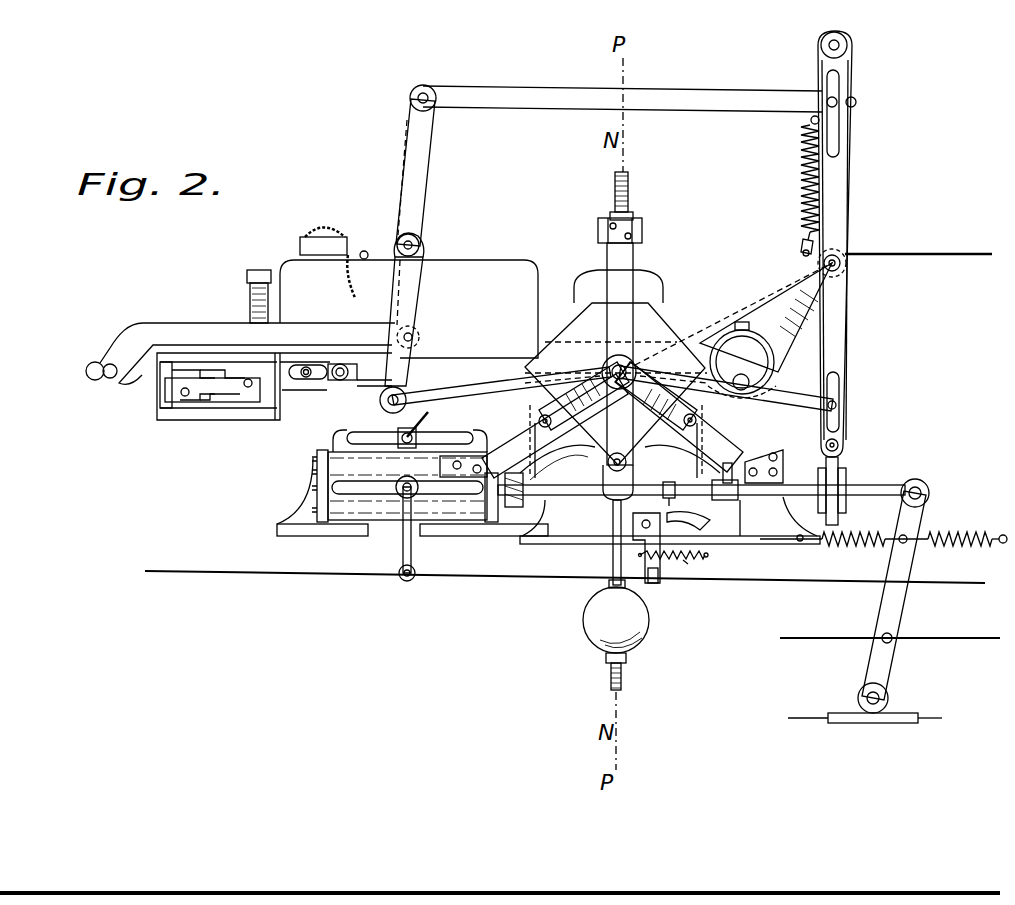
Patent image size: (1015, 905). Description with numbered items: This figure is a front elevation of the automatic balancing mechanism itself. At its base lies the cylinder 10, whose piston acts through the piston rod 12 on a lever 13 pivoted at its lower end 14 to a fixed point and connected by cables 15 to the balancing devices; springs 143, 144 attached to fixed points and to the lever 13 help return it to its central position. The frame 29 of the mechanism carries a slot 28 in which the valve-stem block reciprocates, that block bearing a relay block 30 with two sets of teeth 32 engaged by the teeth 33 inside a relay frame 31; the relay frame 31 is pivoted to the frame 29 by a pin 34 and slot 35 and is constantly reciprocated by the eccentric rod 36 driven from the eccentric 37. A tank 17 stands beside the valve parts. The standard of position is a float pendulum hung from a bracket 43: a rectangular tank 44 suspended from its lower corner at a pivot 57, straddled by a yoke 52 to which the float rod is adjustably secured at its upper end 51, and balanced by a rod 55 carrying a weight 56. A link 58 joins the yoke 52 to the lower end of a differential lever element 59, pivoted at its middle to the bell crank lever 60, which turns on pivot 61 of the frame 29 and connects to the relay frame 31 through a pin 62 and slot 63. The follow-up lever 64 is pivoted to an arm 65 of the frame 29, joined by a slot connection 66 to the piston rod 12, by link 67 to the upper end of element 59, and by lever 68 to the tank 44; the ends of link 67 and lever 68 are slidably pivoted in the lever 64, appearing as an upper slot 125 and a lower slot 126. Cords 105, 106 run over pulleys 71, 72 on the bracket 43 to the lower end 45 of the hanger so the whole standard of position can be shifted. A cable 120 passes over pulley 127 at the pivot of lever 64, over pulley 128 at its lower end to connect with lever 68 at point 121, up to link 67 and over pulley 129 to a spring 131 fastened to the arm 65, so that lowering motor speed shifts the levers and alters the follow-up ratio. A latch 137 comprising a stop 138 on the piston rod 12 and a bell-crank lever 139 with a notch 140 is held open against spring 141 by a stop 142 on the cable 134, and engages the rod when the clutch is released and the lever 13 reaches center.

The cylinder 10 is at (365, 505).
The piston rod 12 is at (574, 494).
The lever 13 is at (898, 610).
The lower end 14 is at (886, 703).
The cables 15 is at (825, 640).
The tank 17 is at (392, 293).
The slot 28 is at (165, 398).
The frame 29 is at (378, 406).
The relay block 30 is at (195, 394).
The relay frame 31 is at (255, 421).
The teeth 32 is at (225, 372).
The teeth 33 is at (207, 370).
The pin 34 is at (306, 380).
The slot 35 is at (340, 381).
The eccentric rod 36 is at (478, 371).
The eccentric 37 is at (742, 360).
The bracket 43 is at (503, 447).
The tank 44 is at (678, 364).
The lower end 45 is at (630, 366).
The upper end 51 is at (628, 213).
The yoke 52 is at (605, 287).
The rod 55 is at (612, 548).
The weight 56 is at (590, 613).
The pivot 57 is at (607, 462).
The link 58 is at (460, 393).
The differential lever element 59 is at (418, 193).
The bell crank lever 60 is at (428, 302).
The pivot 61 is at (418, 338).
The pin 62 is at (108, 379).
The slot 63 is at (85, 371).
The lever 64 is at (836, 324).
The arm 65 is at (766, 317).
The slot connection 66 is at (846, 482).
The link 67 is at (697, 106).
The lever 68 is at (775, 404).
The pulley 71 is at (540, 418).
The pulley 72 is at (698, 422).
The cord 105 is at (553, 441).
The cord 106 is at (683, 441).
The cable 120 is at (960, 260).
The point 121 is at (840, 407).
The slot 125 is at (840, 126).
The slot 126 is at (840, 383).
The pulley 127 is at (845, 262).
The pulley 128 is at (845, 446).
The pulley 129 is at (848, 47).
The spring 131 is at (803, 186).
The cable 134 is at (268, 578).
The latch 137 is at (642, 537).
The stop 138 is at (666, 518).
The bell-crank lever 139 is at (672, 524).
The notch 140 is at (680, 522).
The spring 141 is at (704, 567).
The stop 142 is at (660, 586).
The spring 143 is at (844, 551).
The spring 144 is at (967, 551).